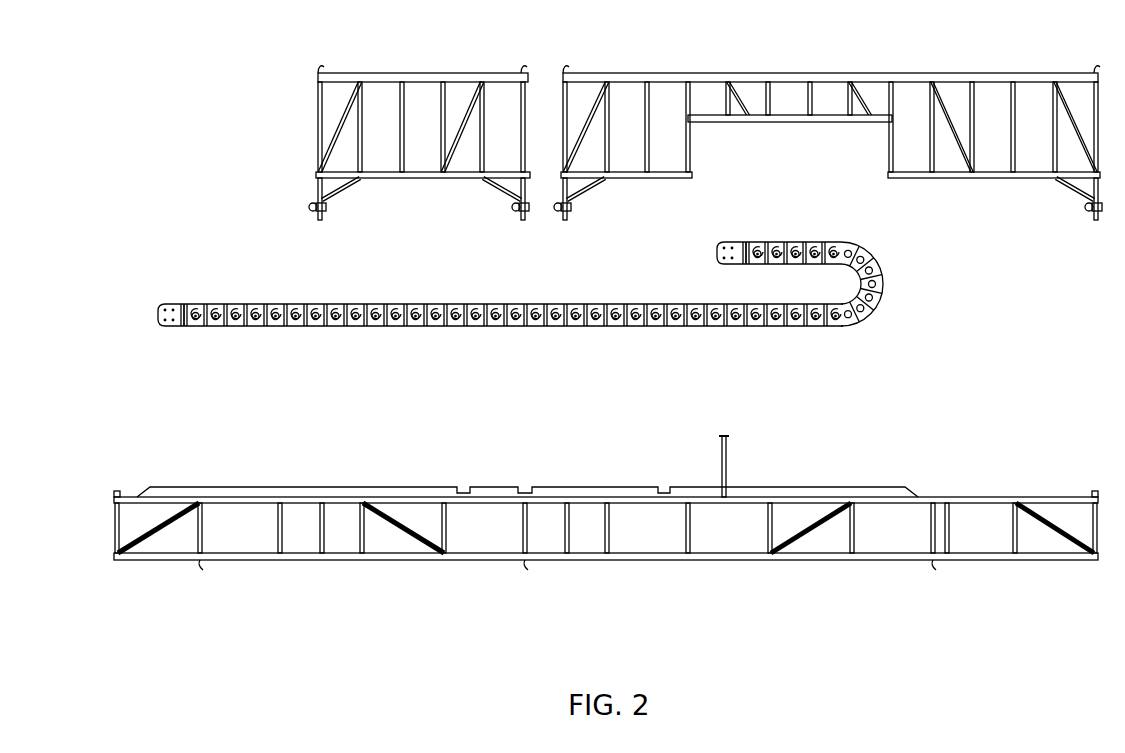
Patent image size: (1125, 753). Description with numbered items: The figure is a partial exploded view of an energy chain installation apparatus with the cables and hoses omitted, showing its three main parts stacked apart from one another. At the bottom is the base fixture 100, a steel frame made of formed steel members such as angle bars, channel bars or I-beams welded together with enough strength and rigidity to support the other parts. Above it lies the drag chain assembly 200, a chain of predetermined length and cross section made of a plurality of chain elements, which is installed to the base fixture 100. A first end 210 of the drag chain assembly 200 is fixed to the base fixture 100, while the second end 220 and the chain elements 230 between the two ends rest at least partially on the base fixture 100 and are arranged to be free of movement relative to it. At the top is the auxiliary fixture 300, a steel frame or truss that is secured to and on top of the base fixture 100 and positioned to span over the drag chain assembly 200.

The base fixture 100 is at (153, 465).
The drag chain assembly 200 is at (203, 268).
The first end 210 is at (202, 326).
The second end 220 is at (747, 264).
The chain elements 230 is at (473, 355).
The auxiliary fixture 300 is at (280, 70).